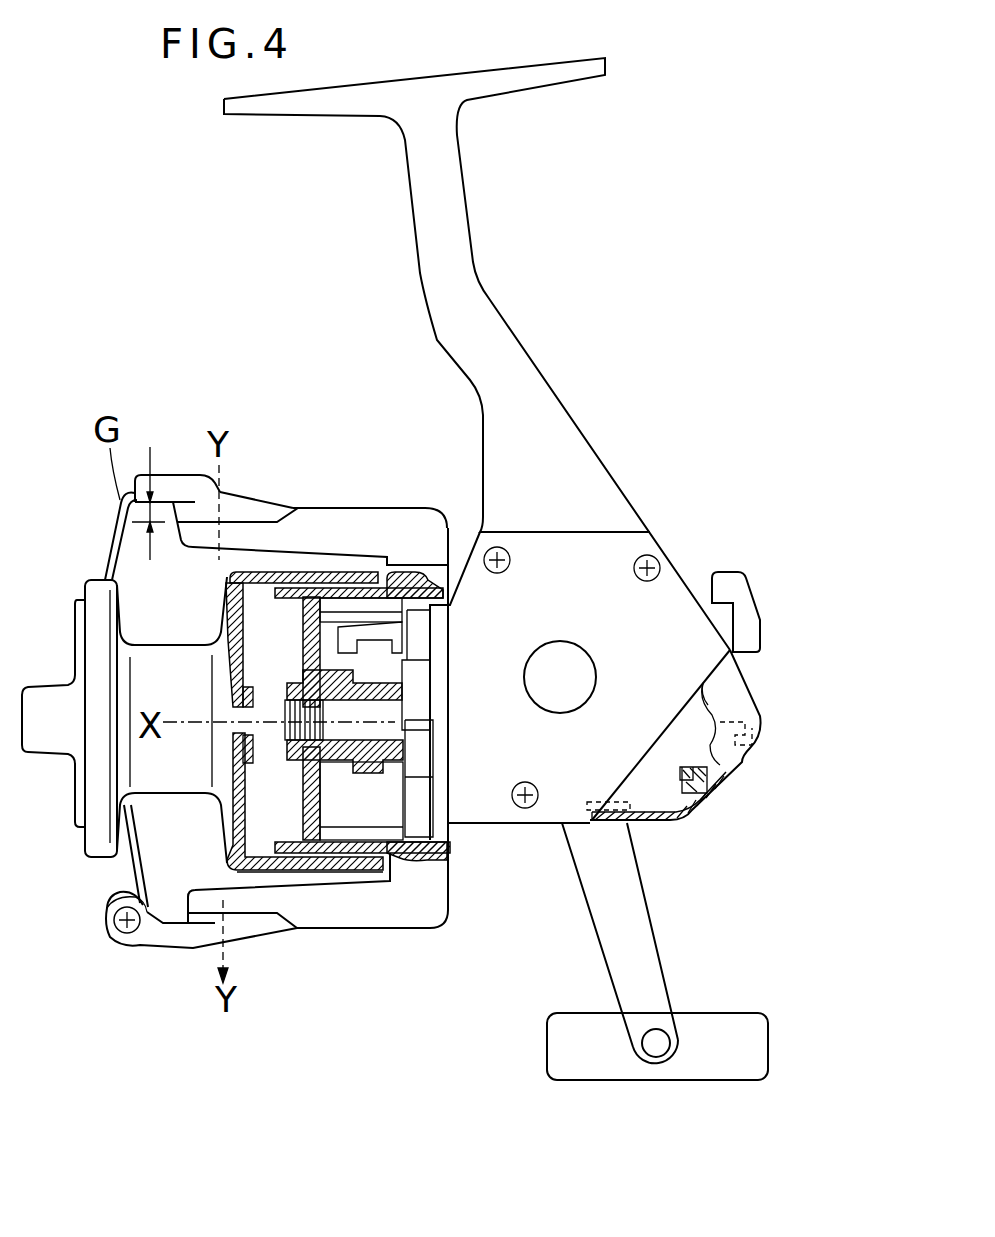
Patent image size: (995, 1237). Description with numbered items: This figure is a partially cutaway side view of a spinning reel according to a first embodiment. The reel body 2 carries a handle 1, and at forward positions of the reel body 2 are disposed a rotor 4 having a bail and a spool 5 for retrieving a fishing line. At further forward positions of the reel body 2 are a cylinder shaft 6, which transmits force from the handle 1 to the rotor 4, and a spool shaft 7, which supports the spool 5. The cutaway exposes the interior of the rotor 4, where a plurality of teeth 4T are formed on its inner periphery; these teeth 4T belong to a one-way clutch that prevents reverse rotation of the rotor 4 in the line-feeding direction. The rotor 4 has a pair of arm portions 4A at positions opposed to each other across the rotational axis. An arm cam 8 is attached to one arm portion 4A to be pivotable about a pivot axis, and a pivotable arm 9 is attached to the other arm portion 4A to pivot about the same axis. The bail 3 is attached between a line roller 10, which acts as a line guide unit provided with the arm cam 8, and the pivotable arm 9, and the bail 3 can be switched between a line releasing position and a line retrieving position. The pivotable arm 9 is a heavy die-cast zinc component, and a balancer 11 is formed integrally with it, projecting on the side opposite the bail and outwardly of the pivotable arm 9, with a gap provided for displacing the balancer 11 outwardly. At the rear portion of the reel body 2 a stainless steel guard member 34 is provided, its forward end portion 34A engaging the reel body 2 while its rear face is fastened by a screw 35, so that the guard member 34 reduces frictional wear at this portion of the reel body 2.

The handle 1 is at (605, 948).
The reel body 2 is at (590, 452).
The bail 3 is at (110, 542).
The rotor 4 is at (452, 880).
The arm portion 4A is at (383, 513).
The teeth 4T is at (360, 835).
The spool 5 is at (172, 787).
The cylinder shaft 6 is at (393, 713).
The spool shaft 7 is at (233, 712).
The arm cam 8 is at (160, 940).
The pivotable arm 9 is at (260, 507).
The line roller 10 is at (107, 898).
The balancer 11 is at (173, 483).
The guard member 34 is at (740, 700).
The forward end portion 34A is at (587, 800).
The screw 35 is at (742, 760).